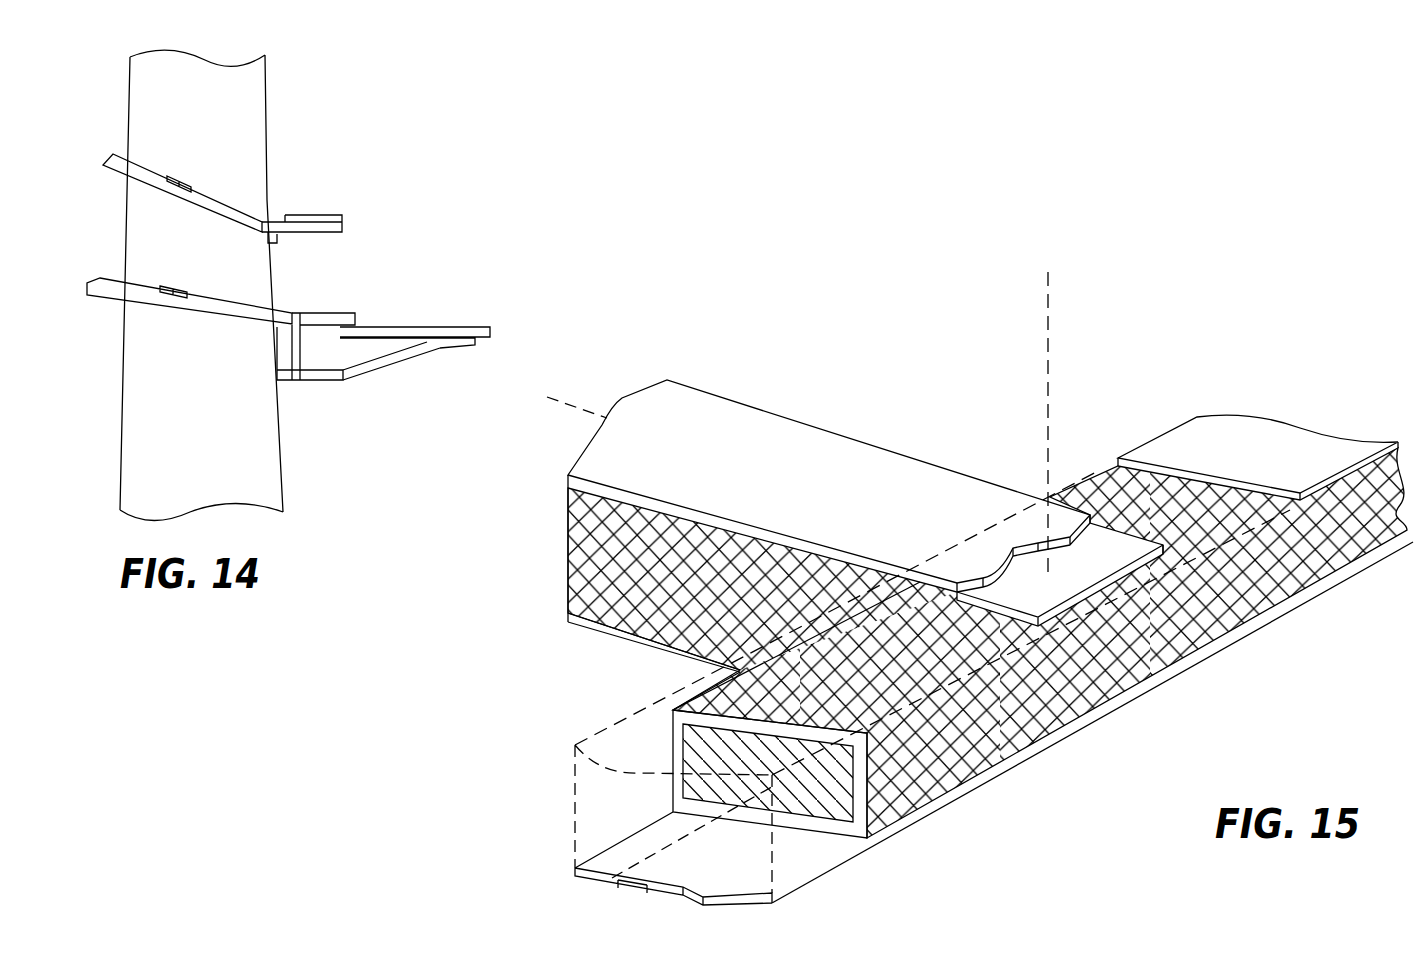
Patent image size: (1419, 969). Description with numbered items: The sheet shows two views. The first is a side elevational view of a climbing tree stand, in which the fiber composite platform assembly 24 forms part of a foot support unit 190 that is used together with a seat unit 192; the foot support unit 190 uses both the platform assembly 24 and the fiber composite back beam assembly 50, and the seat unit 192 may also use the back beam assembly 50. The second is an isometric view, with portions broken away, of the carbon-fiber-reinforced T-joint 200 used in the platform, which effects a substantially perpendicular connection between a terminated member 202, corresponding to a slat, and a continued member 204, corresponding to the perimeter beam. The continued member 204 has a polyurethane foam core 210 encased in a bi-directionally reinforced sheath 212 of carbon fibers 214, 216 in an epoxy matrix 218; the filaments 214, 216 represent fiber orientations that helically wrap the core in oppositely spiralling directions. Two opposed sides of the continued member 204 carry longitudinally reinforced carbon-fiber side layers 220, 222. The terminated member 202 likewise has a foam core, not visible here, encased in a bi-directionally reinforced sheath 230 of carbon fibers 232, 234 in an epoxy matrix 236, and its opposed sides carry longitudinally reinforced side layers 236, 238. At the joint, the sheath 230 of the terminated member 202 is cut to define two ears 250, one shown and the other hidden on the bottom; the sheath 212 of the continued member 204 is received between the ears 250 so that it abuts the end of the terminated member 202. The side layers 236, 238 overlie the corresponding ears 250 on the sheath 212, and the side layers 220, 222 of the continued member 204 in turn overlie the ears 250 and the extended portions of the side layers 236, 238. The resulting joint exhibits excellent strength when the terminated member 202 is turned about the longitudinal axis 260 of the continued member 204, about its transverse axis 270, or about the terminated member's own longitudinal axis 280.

In FIG. 14, the fiber composite back beam assembly 50 is at (120, 152).
In FIG. 14, the seat unit 192 is at (325, 210).
In FIG. 14, the platform assembly 24 is at (402, 322).
In FIG. 14, the foot support unit 190 is at (410, 358).
In FIG. 15, the T-joint 200 is at (858, 462).
In FIG. 15, the terminated member 202 is at (735, 418).
In FIG. 15, the continued member 204 is at (1223, 432).
In FIG. 15, the foam core 210 is at (855, 822).
In FIG. 15, the bi-directionally reinforced sheath 212 is at (880, 797).
In FIG. 15, the carbon fibers 214 is at (1023, 747).
In FIG. 15, the carbon fibers 216 is at (1052, 705).
In FIG. 15, the epoxy matrix 218 is at (1033, 733).
In FIG. 15, the carbon-fiber-reinforced side layer 220 is at (753, 862).
In FIG. 15, the carbon-fiber-reinforced side layer 222 is at (1320, 452).
In FIG. 15, the bi-directionally reinforced sheath 230 is at (568, 545).
In FIG. 15, the carbon fibers 232 is at (610, 622).
In FIG. 15, the carbon fibers 234 is at (627, 615).
In FIG. 15, the epoxy matrix / carbon-fiber-reinforced side layer 236 is at (642, 397).
In FIG. 15, the carbon-fiber-reinforced side layer 238 is at (663, 645).
In FIG. 15, the ears 250 is at (1107, 550).
In FIG. 15, the longitudinal axis 260 is at (577, 898).
In FIG. 15, the transverse axis 270 is at (1048, 310).
In FIG. 15, the longitudinal axis 280 is at (580, 406).